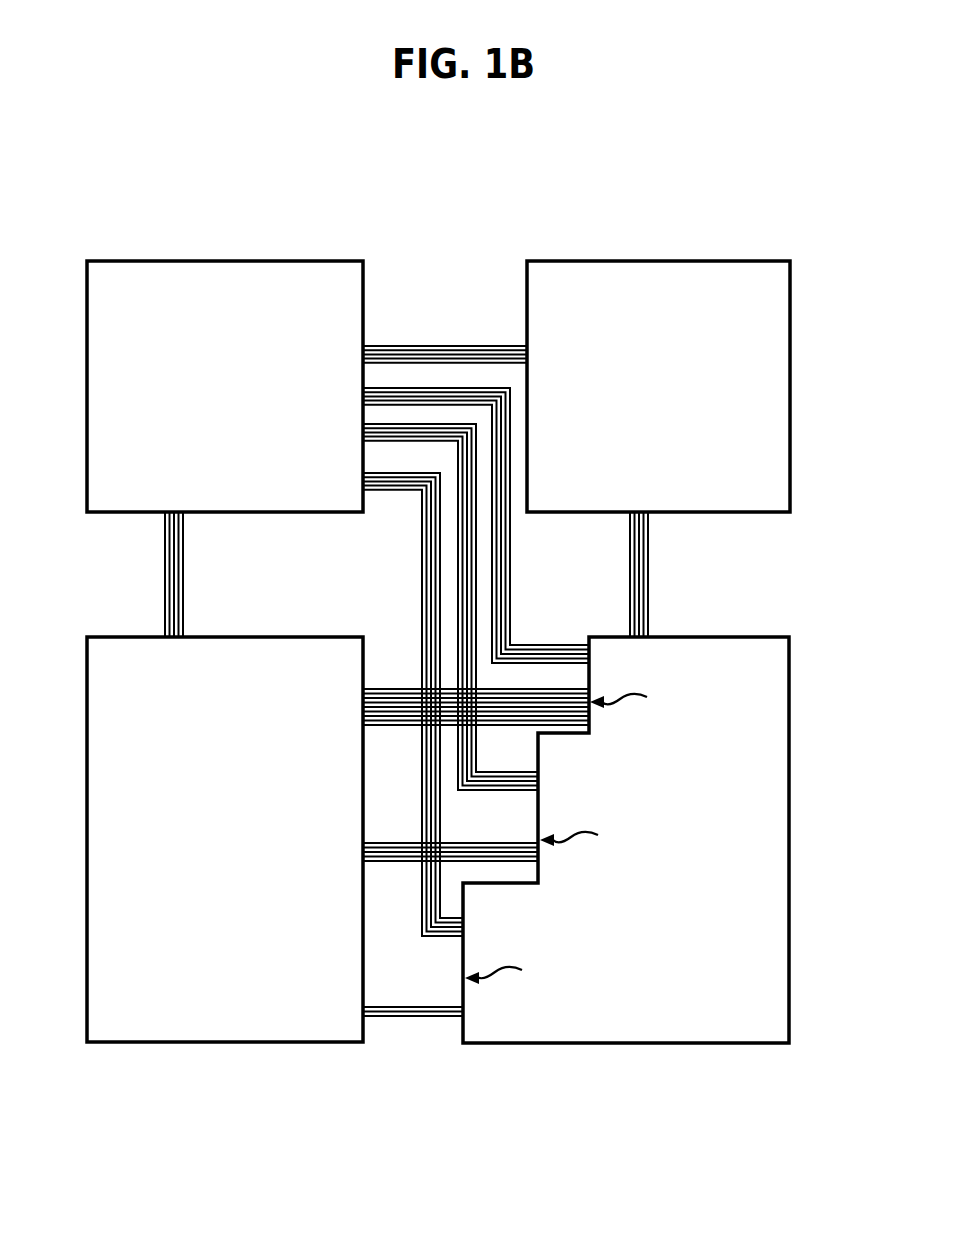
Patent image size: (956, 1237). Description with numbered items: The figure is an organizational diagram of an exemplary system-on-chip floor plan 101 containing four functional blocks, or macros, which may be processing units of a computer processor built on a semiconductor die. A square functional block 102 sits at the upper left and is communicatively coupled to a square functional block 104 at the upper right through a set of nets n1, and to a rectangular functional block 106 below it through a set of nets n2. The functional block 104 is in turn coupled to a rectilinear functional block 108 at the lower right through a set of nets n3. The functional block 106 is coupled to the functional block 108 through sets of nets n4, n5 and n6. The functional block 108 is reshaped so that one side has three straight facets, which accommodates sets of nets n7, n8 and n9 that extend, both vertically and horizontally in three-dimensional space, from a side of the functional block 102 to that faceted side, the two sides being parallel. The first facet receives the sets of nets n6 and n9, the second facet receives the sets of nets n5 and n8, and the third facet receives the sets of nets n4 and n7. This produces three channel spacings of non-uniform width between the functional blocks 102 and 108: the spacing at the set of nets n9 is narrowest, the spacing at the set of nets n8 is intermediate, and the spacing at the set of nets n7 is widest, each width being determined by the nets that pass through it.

The integrated circuit floorplan / routing arrangement 101 is at (727, 171).
The functional block 102 is at (233, 376).
The functional block 104 is at (698, 386).
The functional block 106 is at (243, 864).
The functional block 108 is at (708, 932).
The set of nets n1 is at (445, 342).
The set of nets n2 is at (188, 574).
The set of nets n3 is at (652, 574).
The set of nets n4 is at (413, 1000).
The set of nets n5 is at (450, 841).
The set of nets n6 is at (476, 696).
The set of nets n7 is at (413, 704).
The set of nets n8 is at (450, 607).
The set of nets n9 is at (476, 525).